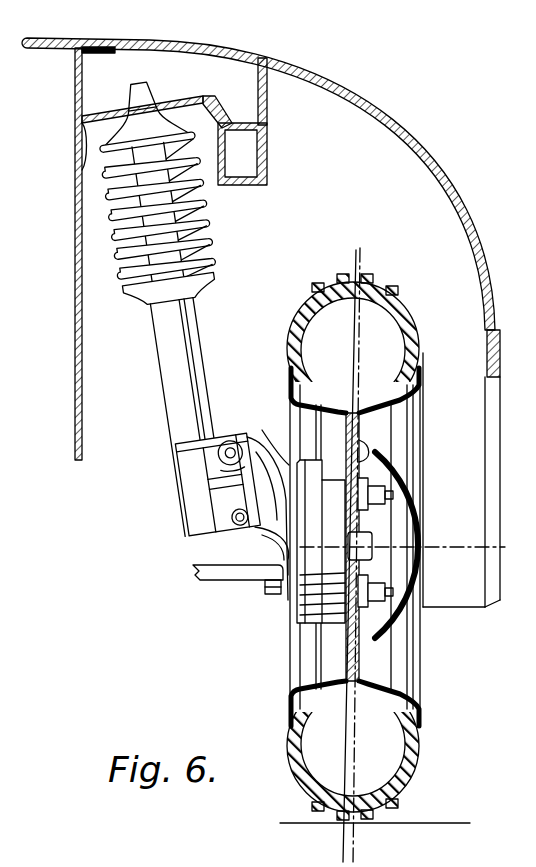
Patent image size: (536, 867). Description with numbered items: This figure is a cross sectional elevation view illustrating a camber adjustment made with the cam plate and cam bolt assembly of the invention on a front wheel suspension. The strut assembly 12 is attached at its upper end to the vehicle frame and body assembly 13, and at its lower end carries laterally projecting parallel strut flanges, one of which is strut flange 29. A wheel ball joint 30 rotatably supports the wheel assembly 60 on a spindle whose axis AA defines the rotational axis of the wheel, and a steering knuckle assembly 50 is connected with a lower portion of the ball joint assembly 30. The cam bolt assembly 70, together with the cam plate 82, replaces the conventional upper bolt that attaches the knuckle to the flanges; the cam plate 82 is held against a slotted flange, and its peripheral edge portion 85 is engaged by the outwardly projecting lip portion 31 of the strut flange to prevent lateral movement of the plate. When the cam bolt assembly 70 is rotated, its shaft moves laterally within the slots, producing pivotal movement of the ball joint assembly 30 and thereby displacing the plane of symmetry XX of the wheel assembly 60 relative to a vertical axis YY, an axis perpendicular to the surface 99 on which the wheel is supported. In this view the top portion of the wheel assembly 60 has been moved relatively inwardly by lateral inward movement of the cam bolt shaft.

The strut assembly 12 is at (242, 254).
The vehicle frame and body assembly 13 is at (185, 103).
The strut flange 29 is at (228, 482).
The wheel ball joint 30 is at (273, 432).
The lip portion 31 is at (262, 546).
The steering knuckle assembly 50 is at (228, 580).
The wheel assembly 60 is at (419, 295).
The cam bolt assembly 70 is at (229, 428).
The cam plate 82 is at (210, 493).
The peripheral edge portion 85 is at (248, 510).
The surface 99 is at (422, 822).
The plane of symmetry XX is at (350, 263).
The vertical axis YY is at (360, 265).
The axis AA is at (504, 547).